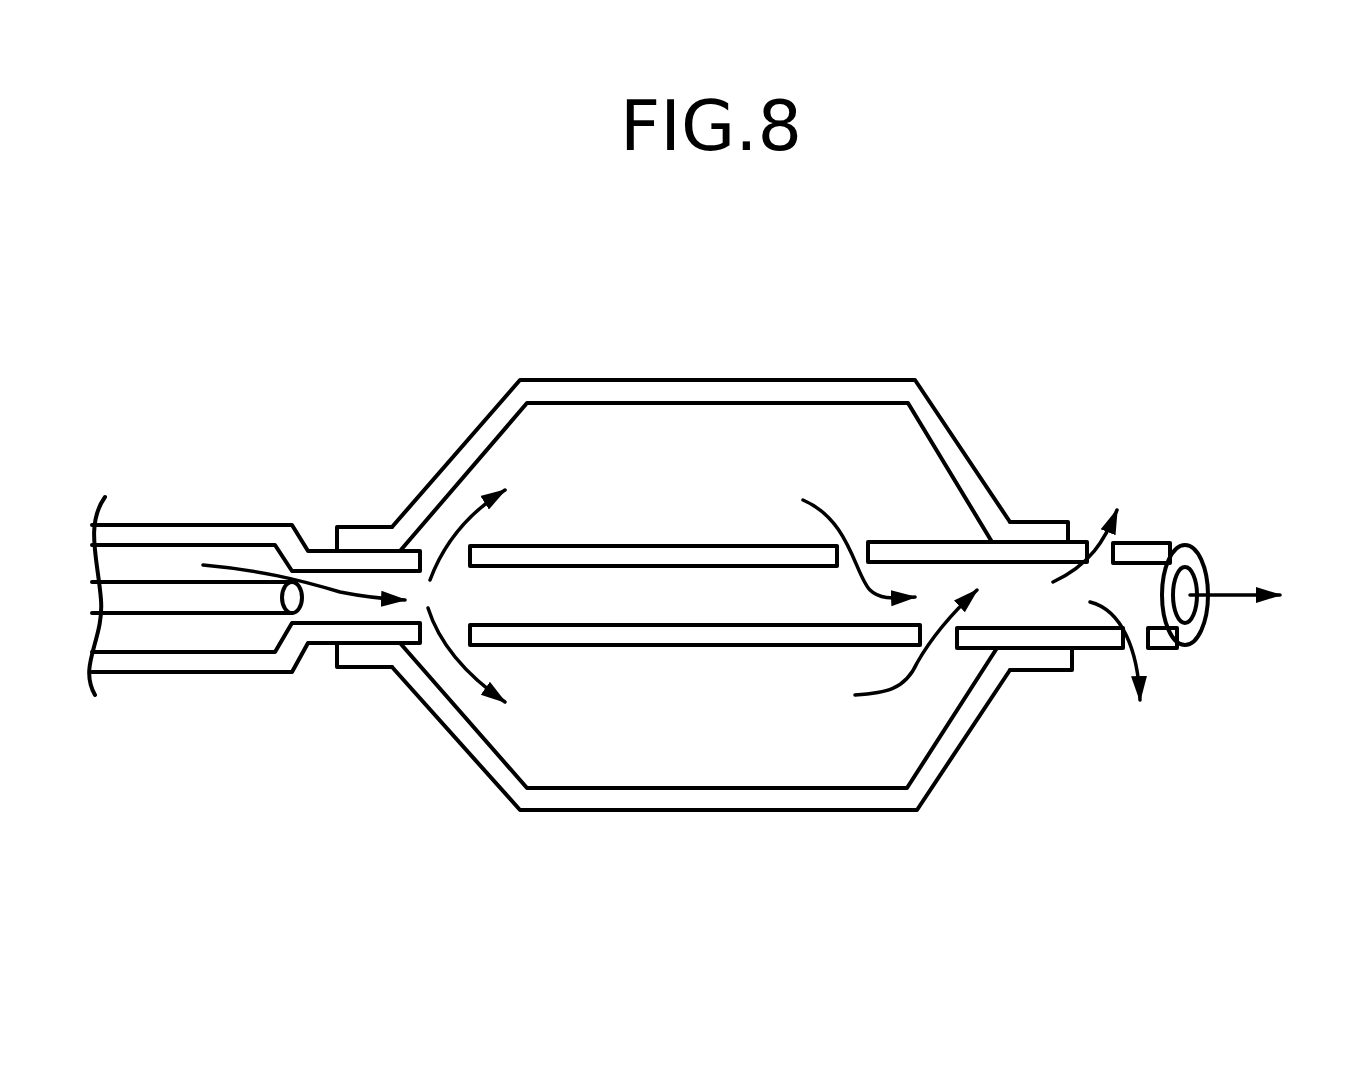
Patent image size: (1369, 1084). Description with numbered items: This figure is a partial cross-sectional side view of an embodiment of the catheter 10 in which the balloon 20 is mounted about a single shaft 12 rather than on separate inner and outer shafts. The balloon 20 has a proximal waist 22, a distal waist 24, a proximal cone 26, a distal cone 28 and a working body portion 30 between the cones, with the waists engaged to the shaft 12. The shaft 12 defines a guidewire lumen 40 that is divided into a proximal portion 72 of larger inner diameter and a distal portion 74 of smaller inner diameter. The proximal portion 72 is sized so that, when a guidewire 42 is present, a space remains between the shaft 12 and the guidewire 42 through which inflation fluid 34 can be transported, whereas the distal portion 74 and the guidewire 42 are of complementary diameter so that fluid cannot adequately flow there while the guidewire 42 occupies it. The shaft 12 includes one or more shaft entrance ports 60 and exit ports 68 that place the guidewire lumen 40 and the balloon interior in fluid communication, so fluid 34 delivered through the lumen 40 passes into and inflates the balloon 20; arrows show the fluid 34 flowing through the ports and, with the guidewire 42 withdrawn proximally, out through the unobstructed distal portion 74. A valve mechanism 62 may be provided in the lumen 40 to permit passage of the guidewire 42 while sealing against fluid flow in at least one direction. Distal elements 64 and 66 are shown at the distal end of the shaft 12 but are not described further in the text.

The catheter 10 is at (532, 323).
The shaft 12 is at (177, 522).
The balloon 20 is at (803, 375).
The proximal waist 22 is at (360, 667).
The distal waist 24 is at (1040, 522).
The proximal cone 26 is at (457, 452).
The distal cone 28 is at (950, 770).
The body portion 30 is at (730, 380).
The inflation fluid 34 is at (250, 565).
The guidewire lumen 40 is at (612, 580).
The guidewire 42 is at (240, 615).
The shaft entrance port 60 is at (945, 640).
The valve mechanism 62 is at (838, 530).
The outlet tube 64 is at (1198, 566).
The outlet ring 66 is at (1190, 648).
The exit port 68 is at (1097, 527).
The proximal portion 72 is at (185, 633).
The distal portion 74 is at (643, 598).